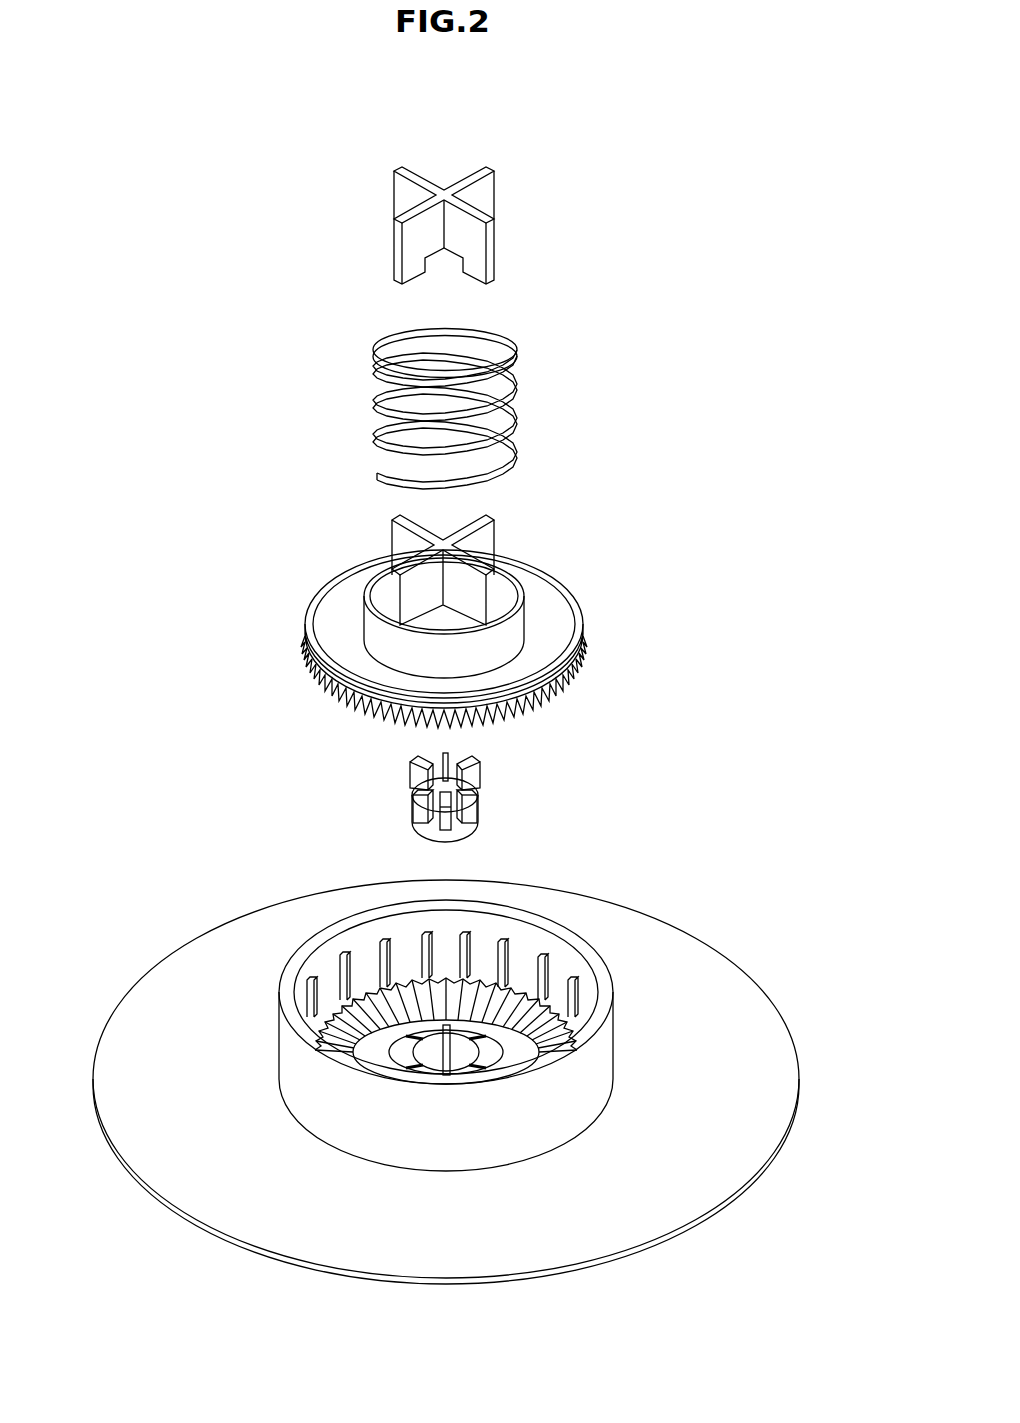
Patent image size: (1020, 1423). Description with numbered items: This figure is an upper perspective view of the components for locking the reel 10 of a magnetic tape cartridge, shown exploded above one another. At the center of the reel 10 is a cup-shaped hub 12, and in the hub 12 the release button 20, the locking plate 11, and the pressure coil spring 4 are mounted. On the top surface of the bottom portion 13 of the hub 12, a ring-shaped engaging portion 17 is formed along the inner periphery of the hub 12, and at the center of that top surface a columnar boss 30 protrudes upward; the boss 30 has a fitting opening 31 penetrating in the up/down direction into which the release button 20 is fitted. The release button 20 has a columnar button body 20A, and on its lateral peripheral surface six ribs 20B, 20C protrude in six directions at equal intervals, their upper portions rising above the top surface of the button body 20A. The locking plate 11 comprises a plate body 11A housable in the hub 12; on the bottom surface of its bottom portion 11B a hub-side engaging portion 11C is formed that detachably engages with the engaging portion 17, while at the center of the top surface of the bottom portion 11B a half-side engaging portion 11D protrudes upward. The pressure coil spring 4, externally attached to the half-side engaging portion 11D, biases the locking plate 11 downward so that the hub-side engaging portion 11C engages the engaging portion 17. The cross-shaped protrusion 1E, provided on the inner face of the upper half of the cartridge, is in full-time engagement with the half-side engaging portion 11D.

The protrusion 1E is at (488, 203).
The pressure coil spring 4 is at (518, 400).
The locking plate 11 is at (566, 614).
The plate body 11A is at (578, 630).
The bottom portion 11B is at (337, 603).
The hub-side engaging portion 11C is at (550, 700).
The half-side engaging portion 11D is at (493, 540).
The release button 20 is at (565, 800).
The button body 20A is at (465, 833).
The ribs 20B is at (443, 758).
The ribs 20C is at (485, 772).
The reel 10 is at (466, 1072).
The hub 12 is at (560, 933).
The bottom portion 13 is at (513, 1060).
The engaging portion 17 is at (560, 1047).
The boss 30 is at (402, 1051).
The fitting opening 31 is at (445, 1060).